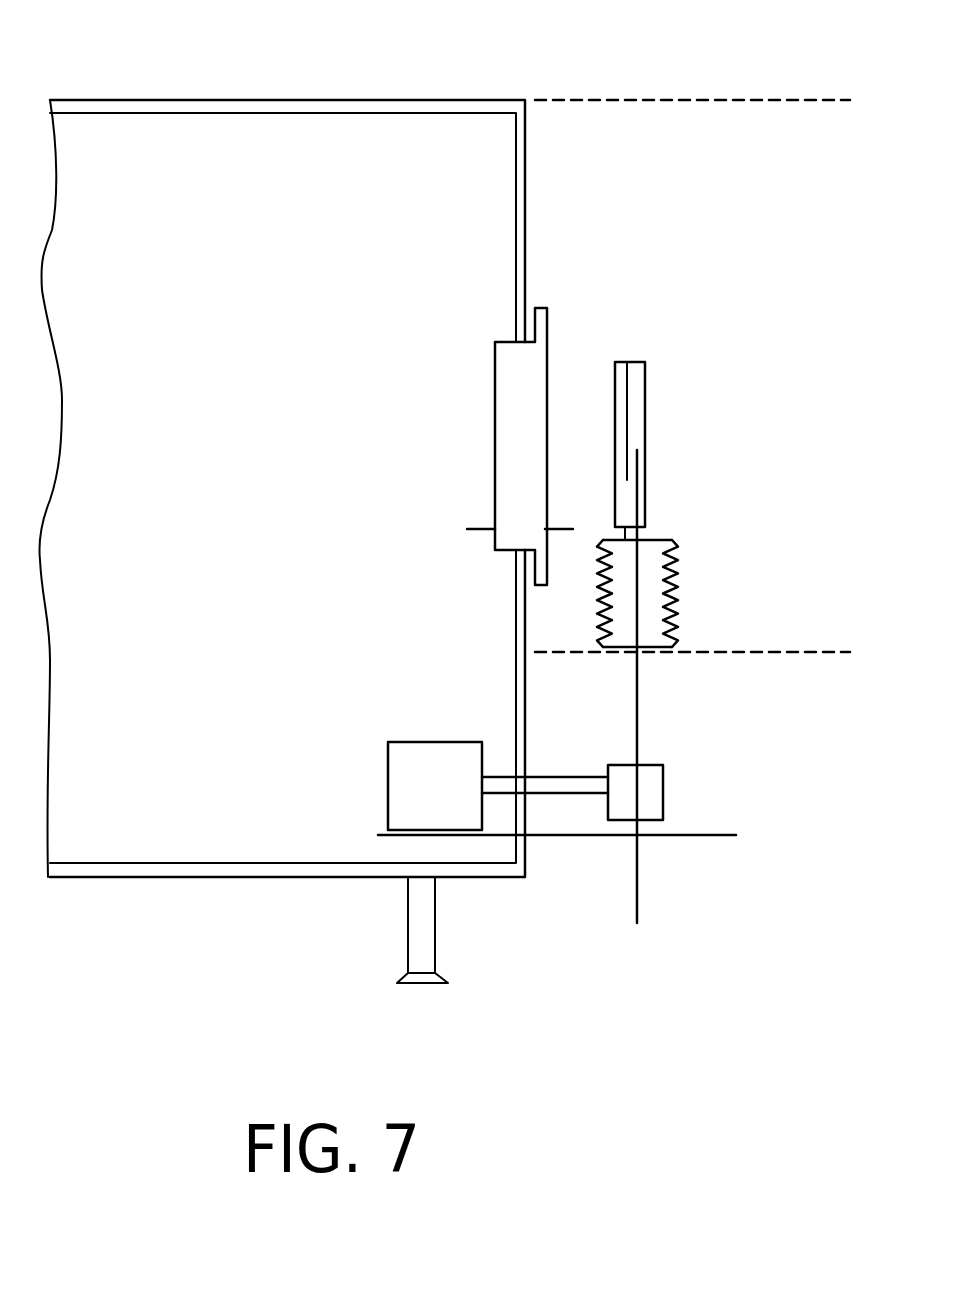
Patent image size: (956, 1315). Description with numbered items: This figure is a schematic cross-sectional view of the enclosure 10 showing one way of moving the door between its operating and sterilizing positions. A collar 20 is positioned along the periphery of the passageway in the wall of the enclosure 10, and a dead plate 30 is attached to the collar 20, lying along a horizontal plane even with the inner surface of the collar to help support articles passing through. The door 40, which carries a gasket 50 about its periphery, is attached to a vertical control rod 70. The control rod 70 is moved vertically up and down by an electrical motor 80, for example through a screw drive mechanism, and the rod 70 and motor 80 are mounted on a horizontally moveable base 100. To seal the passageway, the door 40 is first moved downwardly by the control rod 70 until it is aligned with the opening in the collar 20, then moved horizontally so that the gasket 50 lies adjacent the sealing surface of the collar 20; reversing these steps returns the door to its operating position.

The enclosure 10 is at (313, 157).
The collar 20 is at (547, 322).
The dead plate 30 is at (560, 528).
The door 40 is at (647, 428).
The gasket 50 is at (635, 362).
The control rod 70 is at (639, 710).
The electrical motor 80 is at (663, 797).
The horizontally moveable base 100 is at (692, 836).